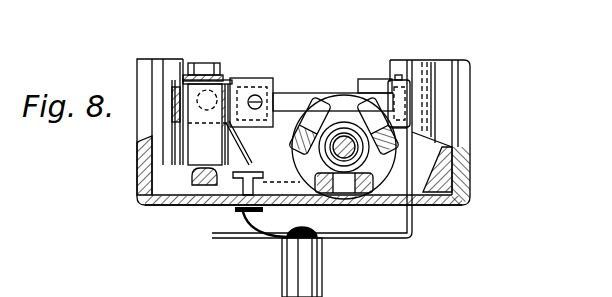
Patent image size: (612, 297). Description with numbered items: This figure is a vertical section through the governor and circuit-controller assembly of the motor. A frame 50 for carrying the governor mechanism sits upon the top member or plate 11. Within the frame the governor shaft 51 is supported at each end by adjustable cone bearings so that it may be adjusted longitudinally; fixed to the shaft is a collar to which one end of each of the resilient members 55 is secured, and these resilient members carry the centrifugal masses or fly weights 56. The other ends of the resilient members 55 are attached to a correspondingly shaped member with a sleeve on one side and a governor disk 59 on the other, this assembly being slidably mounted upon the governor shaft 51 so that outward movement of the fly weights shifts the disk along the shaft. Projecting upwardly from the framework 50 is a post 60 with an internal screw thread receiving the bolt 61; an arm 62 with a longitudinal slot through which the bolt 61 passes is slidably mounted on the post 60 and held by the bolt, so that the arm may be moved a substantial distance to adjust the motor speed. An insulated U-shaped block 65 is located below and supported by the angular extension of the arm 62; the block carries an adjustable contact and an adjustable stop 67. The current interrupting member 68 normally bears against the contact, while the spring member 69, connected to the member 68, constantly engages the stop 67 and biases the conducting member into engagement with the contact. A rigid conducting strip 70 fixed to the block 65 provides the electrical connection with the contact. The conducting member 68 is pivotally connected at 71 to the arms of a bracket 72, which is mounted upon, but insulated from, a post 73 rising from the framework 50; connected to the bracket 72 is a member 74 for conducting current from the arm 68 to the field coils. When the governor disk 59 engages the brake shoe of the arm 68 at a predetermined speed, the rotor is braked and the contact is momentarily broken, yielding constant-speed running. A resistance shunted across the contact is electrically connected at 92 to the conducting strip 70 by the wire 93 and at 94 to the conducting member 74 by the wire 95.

The top member or plate 11 is at (466, 192).
The frame 50 is at (234, 186).
The governor shaft 51 is at (341, 140).
The resilient members 55 is at (389, 163).
The centrifugal masses or fly weights 56 is at (313, 110).
The governor disk 59 is at (450, 148).
The post 60 is at (197, 138).
The bolt 61 is at (213, 57).
The arm 62 is at (232, 73).
The insulated U-shaped block 65 is at (282, 80).
The adjustable stop 67 is at (254, 109).
The current interrupting member 68 is at (377, 82).
The spring member 69 is at (303, 104).
The rigid conducting member or strip 70 is at (172, 96).
The pivotal connection 71 is at (399, 78).
The bracket 72 is at (410, 106).
The post 73 is at (394, 75).
The conducting member 74 is at (413, 230).
The electrical connection point 92 is at (230, 82).
The wire 93 is at (162, 205).
The electrical connection point 94 is at (287, 236).
The wire 95 is at (253, 228).